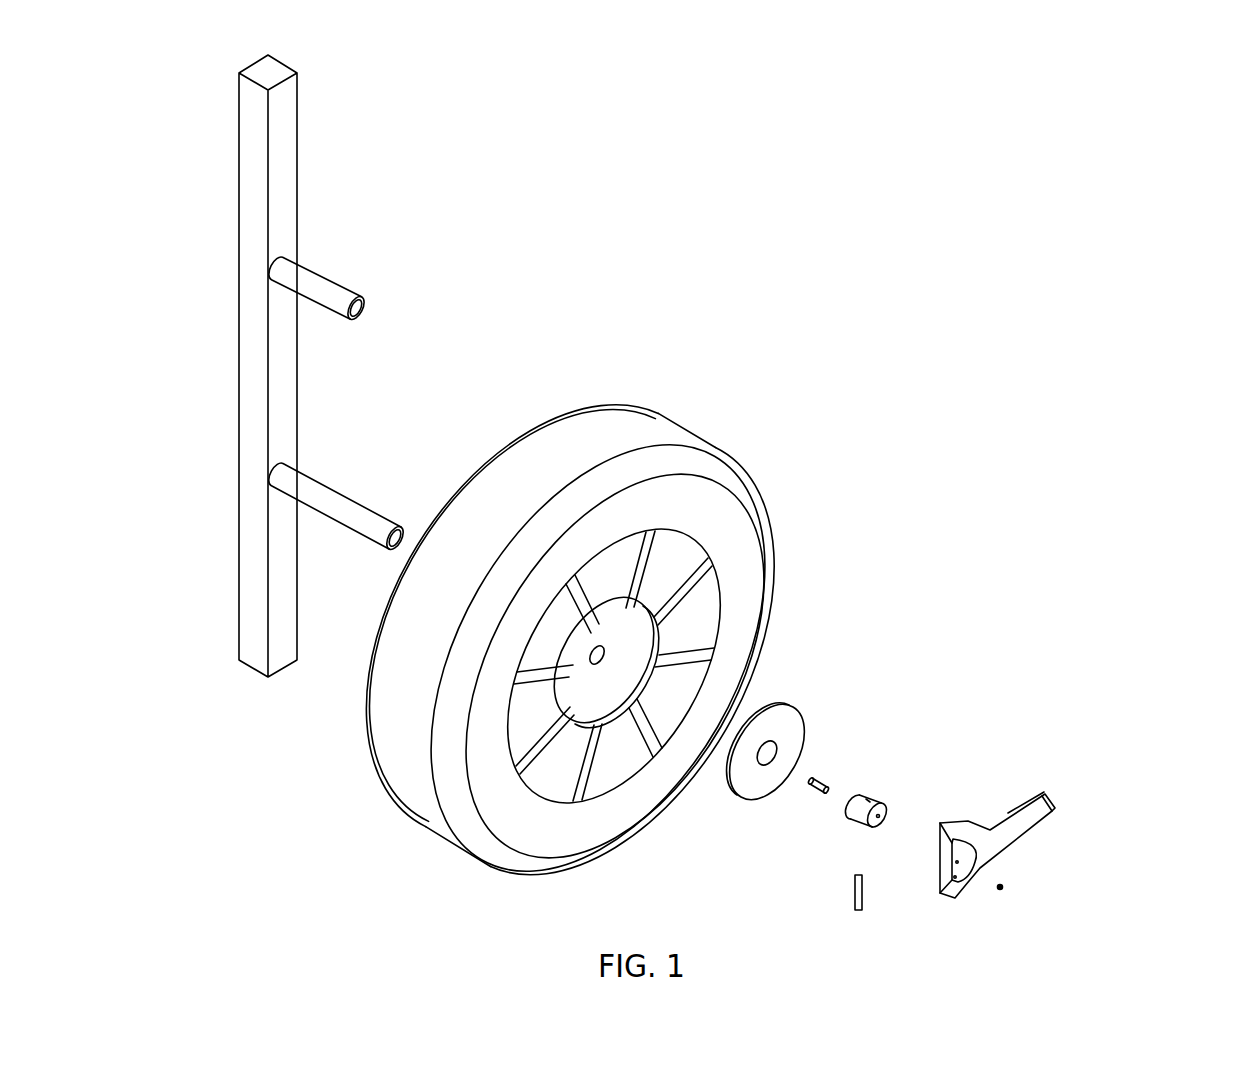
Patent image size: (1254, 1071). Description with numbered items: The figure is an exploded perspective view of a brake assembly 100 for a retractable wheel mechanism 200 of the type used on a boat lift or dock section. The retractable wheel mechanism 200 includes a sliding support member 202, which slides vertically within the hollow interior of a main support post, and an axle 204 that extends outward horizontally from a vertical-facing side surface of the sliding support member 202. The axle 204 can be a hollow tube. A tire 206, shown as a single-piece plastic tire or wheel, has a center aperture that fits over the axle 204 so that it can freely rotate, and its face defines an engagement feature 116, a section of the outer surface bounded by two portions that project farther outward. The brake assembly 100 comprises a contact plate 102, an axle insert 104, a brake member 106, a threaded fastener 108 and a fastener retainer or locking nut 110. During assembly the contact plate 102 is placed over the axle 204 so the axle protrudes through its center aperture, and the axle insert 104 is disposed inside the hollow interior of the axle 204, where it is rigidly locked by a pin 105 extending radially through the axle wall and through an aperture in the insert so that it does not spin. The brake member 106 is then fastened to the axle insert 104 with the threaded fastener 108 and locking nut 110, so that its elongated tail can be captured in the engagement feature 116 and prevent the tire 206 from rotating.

The brake assembly 100 is at (1097, 637).
The contact plate 102 is at (797, 729).
The axle insert 104 is at (852, 813).
The pin 105 is at (862, 898).
The brake member 106 is at (1040, 818).
The threaded fastener 108 is at (822, 786).
The fastener retainer (locking nut) 110 is at (1000, 887).
The engagement feature 116 is at (613, 562).
The retractable wheel mechanism 200 is at (867, 357).
The sliding support member 202 is at (289, 181).
The axle 204 is at (373, 510).
The tire 206 is at (758, 525).